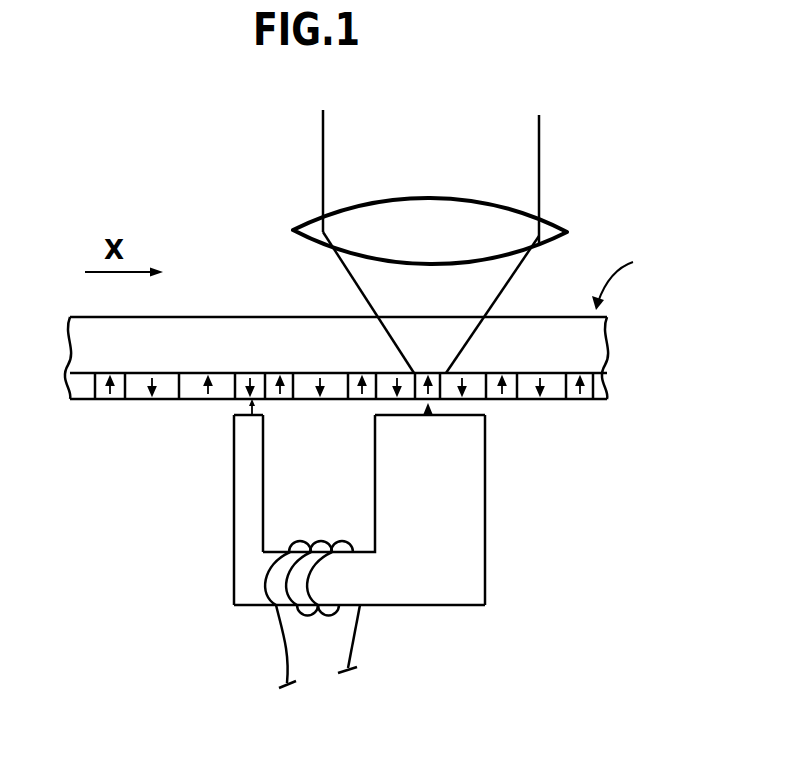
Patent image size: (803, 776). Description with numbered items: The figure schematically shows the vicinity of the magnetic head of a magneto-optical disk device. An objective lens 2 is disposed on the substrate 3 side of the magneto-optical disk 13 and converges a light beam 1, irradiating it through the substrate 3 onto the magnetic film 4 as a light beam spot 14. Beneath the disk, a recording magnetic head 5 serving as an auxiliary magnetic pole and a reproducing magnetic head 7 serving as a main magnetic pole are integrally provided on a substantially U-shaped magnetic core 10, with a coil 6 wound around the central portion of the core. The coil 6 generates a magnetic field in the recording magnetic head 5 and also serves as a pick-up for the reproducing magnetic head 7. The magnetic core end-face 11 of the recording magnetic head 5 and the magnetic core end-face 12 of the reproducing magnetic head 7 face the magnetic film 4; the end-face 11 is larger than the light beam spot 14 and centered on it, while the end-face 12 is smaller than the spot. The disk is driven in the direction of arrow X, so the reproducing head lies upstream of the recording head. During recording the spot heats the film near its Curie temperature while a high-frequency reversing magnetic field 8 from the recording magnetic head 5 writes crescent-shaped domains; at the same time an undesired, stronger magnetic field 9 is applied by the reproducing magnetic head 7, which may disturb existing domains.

The light beam 1 is at (520, 152).
The objective lens 2 is at (545, 222).
The substrate 3 is at (585, 345).
The magnetic film 4 is at (585, 387).
The recording magnetic head 5 is at (467, 490).
The coil 6 is at (363, 628).
The reproducing magnetic head 7 is at (242, 453).
The magnetic field 8 is at (429, 411).
The magnetic field 9 is at (254, 402).
The magnetic core 10 is at (457, 607).
The magnetic core end-face 11 is at (468, 415).
The magnetic core end-face 12 is at (237, 411).
The magneto-optical disk 13 is at (630, 274).
The light beam spot 14 is at (428, 408).